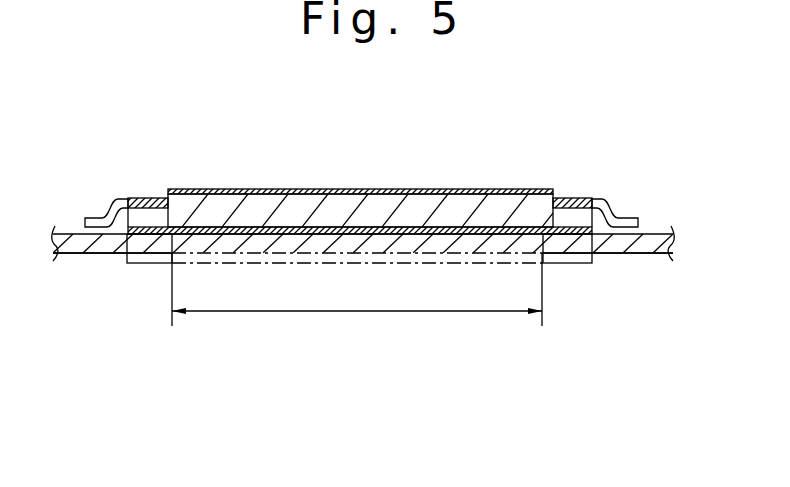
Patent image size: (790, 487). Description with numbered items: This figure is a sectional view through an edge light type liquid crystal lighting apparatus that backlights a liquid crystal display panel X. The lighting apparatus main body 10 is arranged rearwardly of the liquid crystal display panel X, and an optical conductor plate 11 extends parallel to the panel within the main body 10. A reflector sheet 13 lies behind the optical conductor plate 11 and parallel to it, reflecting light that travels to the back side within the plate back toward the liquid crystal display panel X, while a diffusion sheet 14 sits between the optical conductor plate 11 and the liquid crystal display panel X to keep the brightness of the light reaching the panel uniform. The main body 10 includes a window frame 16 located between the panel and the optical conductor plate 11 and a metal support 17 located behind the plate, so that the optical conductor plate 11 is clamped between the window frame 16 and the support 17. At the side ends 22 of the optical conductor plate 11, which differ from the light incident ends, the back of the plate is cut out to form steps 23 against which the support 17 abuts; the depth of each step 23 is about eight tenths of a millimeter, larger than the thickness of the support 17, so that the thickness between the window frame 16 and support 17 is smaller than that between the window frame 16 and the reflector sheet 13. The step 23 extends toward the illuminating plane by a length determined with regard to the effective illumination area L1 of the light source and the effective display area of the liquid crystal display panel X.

The lighting apparatus main body 10 is at (648, 270).
The optical conductor plate 11 is at (507, 210).
The reflector sheet 13 is at (397, 190).
The diffusion sheet 14 is at (291, 226).
The window frame 16 is at (80, 253).
The support 17 is at (145, 198).
The side ends 22 is at (111, 203).
The steps 23 is at (155, 263).
The liquid crystal display panel X is at (140, 263).
The effective illumination area L1 is at (357, 303).